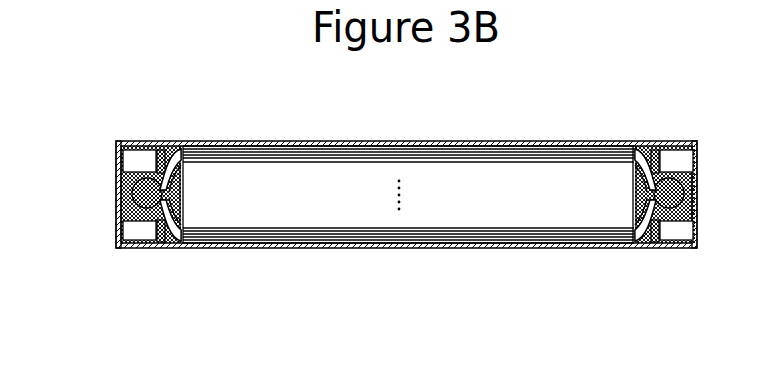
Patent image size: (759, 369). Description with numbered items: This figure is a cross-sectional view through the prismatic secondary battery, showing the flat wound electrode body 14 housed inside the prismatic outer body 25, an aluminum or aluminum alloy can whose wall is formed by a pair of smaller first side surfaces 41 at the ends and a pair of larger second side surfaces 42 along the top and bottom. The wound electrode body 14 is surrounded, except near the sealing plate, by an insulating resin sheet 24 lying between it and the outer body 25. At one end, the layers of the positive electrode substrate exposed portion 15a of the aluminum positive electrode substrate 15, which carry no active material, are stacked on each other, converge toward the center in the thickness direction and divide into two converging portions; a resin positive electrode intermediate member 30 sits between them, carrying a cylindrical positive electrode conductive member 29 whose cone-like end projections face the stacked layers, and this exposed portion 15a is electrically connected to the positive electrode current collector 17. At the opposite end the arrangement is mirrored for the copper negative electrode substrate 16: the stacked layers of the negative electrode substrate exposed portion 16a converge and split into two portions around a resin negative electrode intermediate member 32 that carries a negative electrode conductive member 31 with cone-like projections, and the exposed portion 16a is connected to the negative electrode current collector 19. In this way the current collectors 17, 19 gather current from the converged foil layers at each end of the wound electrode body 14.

The flat wound electrode body 14 is at (534, 172).
The positive electrode substrate 15 is at (640, 210).
The positive electrode substrate exposed portion 15a is at (636, 178).
The negative electrode substrate 16 is at (198, 215).
The negative electrode substrate exposed portion 16a is at (178, 165).
The positive electrode current collector 17 is at (696, 144).
The negative electrode current collector 19 is at (118, 146).
The insulating sheet 24 is at (350, 146).
The prismatic outer body 25 is at (302, 142).
The positive electrode conductive member 29 is at (692, 170).
The positive electrode intermediate member 30 is at (688, 191).
The negative electrode conductive member 31 is at (128, 177).
The negative electrode intermediate member 32 is at (127, 200).
The first side surface 41 is at (115, 220).
The second side surface 42 is at (406, 142).